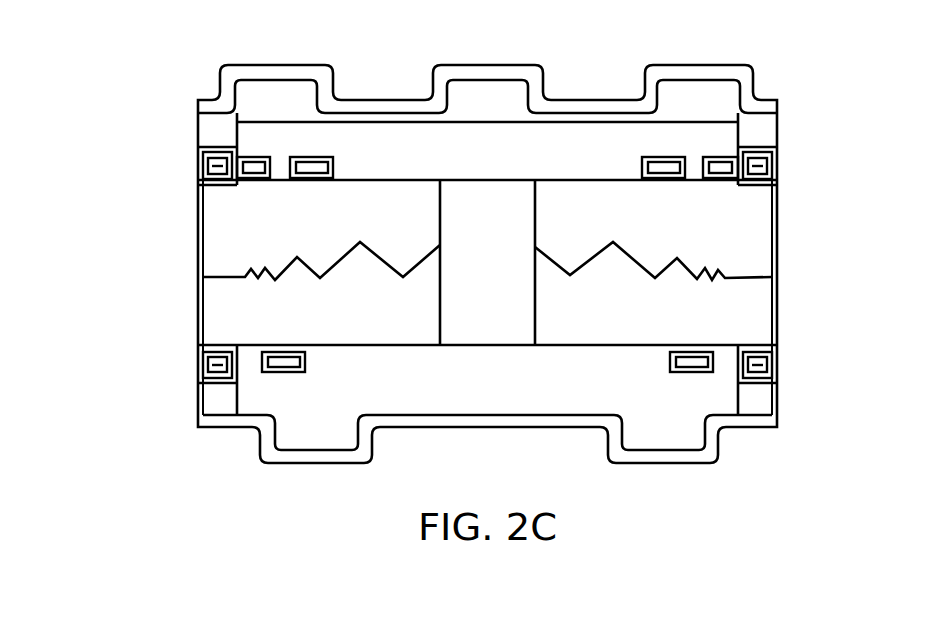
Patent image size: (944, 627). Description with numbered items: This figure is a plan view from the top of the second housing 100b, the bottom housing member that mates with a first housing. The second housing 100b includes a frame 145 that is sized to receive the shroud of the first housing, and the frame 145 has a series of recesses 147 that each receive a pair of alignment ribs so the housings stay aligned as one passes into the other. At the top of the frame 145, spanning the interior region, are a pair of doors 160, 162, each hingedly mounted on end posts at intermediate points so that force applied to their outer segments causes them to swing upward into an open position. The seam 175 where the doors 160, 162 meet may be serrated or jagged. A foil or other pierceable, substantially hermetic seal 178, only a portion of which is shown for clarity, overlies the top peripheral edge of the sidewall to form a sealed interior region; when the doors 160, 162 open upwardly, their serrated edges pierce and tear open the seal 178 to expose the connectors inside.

The second housing 100b is at (169, 392).
The frame 145 is at (273, 69).
The recesses 147 is at (320, 437).
The door 160 is at (218, 222).
The door 162 is at (215, 314).
The seam 175 is at (718, 270).
The seal 178 is at (520, 192).